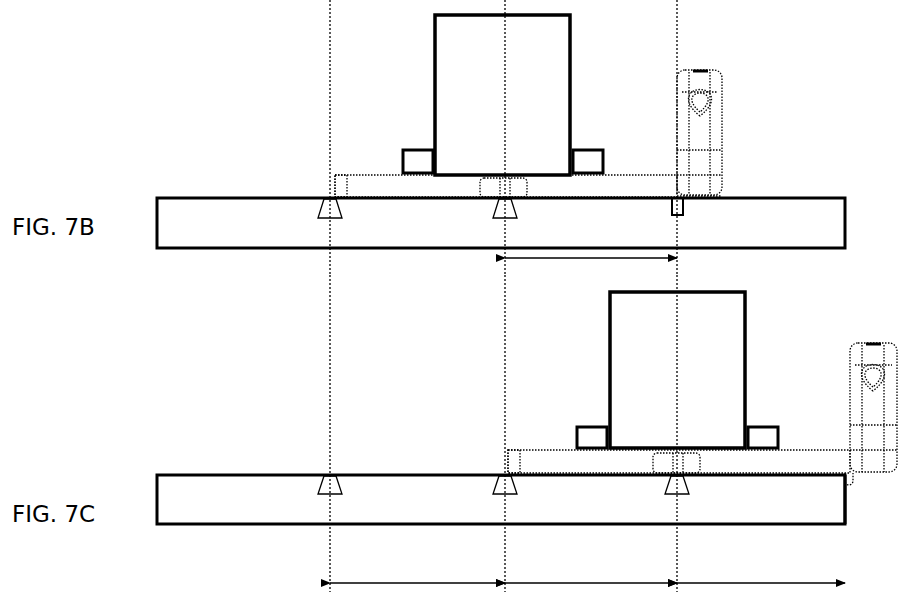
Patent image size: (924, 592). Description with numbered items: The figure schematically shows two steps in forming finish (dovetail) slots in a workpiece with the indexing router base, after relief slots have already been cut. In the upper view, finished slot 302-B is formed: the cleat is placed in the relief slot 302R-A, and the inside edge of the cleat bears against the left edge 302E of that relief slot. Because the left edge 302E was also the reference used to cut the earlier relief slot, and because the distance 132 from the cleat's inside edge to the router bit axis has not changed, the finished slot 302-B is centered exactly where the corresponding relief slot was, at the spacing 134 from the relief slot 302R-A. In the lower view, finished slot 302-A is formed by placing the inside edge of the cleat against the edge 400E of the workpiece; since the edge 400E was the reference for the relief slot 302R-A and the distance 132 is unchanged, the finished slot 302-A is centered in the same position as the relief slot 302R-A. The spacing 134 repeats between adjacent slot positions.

In FIG. 7B, the distance 132 is at (396, 0).
In FIG. 7C, the distance 132 is at (742, 582).
In FIG. 7C, the distance 134 is at (412, 582).
In FIG. 7C, the finished slot 302-A is at (660, 488).
In FIG. 7B, the finished slot 302-B is at (490, 213).
In FIG. 7B, the left edge of the relief slot 302E is at (672, 209).
In FIG. 7B, the relief slot 302R-A is at (686, 212).
In FIG. 7C, the edge of the workpiece 400E is at (843, 505).